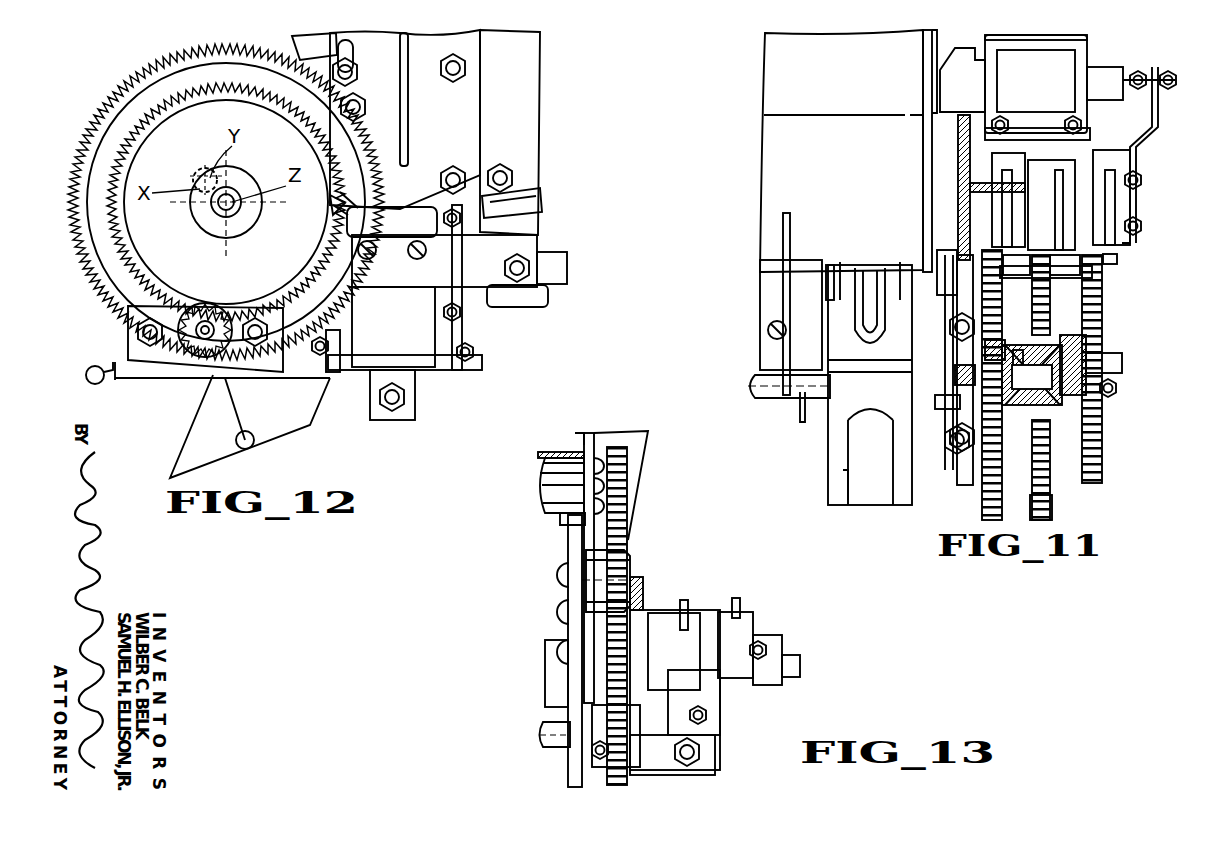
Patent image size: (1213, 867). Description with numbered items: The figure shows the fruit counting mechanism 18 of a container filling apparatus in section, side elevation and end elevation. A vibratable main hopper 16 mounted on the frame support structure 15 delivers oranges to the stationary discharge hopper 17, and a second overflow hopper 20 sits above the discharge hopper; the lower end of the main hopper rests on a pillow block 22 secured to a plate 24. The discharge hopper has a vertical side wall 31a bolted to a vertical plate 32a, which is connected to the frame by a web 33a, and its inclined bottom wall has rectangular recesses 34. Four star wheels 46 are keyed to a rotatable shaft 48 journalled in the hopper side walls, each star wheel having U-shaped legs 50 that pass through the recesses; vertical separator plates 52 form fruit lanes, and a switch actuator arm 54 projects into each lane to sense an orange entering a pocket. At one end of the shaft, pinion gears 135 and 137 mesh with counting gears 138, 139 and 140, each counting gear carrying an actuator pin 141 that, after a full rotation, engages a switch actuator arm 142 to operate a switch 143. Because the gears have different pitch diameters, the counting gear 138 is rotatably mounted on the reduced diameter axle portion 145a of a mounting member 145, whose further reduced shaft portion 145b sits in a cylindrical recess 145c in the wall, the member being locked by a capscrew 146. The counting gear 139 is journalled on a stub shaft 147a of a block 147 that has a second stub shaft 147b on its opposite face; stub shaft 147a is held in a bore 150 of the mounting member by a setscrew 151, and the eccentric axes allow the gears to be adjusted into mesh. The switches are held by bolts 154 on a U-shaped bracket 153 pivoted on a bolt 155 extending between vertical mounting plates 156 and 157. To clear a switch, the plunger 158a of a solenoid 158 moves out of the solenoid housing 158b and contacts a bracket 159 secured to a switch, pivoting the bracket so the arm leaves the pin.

In FIG. 11, the frame support structure 15 is at (952, 180).
In FIG. 12, the vibratable main hopper 16 is at (510, 132).
In FIG. 11, the vibratable main hopper 16 is at (841, 151).
In FIG. 11, the stationary discharge hopper 17 is at (762, 298).
In FIG. 13, the stationary discharge hopper 17 is at (546, 669).
In FIG. 12, the counting mechanism 18 is at (126, 312).
In FIG. 11, the counting mechanism 18 is at (824, 456).
In FIG. 12, the second overflow hopper 20 is at (300, 40).
In FIG. 12, the pillow block 22 is at (520, 202).
In FIG. 12, the plate 24 is at (518, 185).
In FIG. 11, the side wall 31a is at (985, 500).
In FIG. 13, the side wall 31a is at (568, 548).
In FIG. 12, the vertical plate 32a is at (405, 119).
In FIG. 12, the web 33a is at (408, 112).
In FIG. 11, the rectangular recess 34 is at (830, 266).
In FIG. 12, the star wheel 46 is at (232, 385).
In FIG. 11, the star wheel 46 is at (836, 390).
In FIG. 12, the rotatable shaft 48 is at (214, 322).
In FIG. 11, the rotatable shaft 48 is at (750, 386).
In FIG. 13, the rotatable shaft 48 is at (542, 735).
In FIG. 12, the leg 50 is at (108, 368).
In FIG. 11, the leg 50 is at (902, 290).
In FIG. 11, the vertical separator plate 52 is at (792, 220).
In FIG. 11, the switch actuator arm 54 is at (868, 306).
In FIG. 12, the pinion gear 135 is at (192, 357).
In FIG. 13, the pinion gear 135 is at (621, 742).
In FIG. 12, the pinion gear 137 is at (203, 314).
In FIG. 12, the counting gear 138 is at (186, 50).
In FIG. 11, the counting gear 138 is at (982, 512).
In FIG. 13, the counting gear 138 is at (627, 526).
In FIG. 12, the counting gear 139 is at (132, 80).
In FIG. 11, the counting gear 139 is at (1048, 498).
In FIG. 12, the counting gear 140 is at (226, 202).
In FIG. 11, the counting gear 140 is at (1100, 448).
In FIG. 12, the actuator pin 141 is at (330, 203).
In FIG. 11, the actuator pin 141 is at (1153, 261).
In FIG. 13, the actuator pin 141 is at (642, 602).
In FIG. 12, the switch actuator arm 142 is at (348, 202).
In FIG. 11, the switch actuator arm 142 is at (1040, 206).
In FIG. 13, the switch actuator arm 142 is at (672, 684).
In FIG. 12, the switch 143 is at (392, 222).
In FIG. 11, the switch 143 is at (1010, 158).
In FIG. 13, the switch 143 is at (636, 662).
In FIG. 11, the mounting member 145 is at (1025, 412).
In FIG. 11, the reduced diameter axle portion 145a is at (998, 348).
In FIG. 12, the further reduced diameter shaft portion 145b is at (204, 168).
In FIG. 11, the further reduced diameter shaft portion 145b is at (964, 452).
In FIG. 11, the cylindrical recess 145c is at (958, 370).
In FIG. 13, the cylindrical recess 145c is at (633, 592).
In FIG. 11, the capscrew 146 is at (938, 404).
In FIG. 11, the block 147 is at (1072, 352).
In FIG. 11, the stub shaft 147a is at (1046, 384).
In FIG. 12, the second stub shaft 147b is at (232, 206).
In FIG. 11, the second stub shaft 147b is at (1124, 366).
In FIG. 12, the bore 150 is at (203, 207).
In FIG. 11, the bore 150 is at (1066, 372).
In FIG. 11, the setscrew 151 is at (1034, 350).
In FIG. 12, the U-shaped bracket 153 is at (407, 287).
In FIG. 11, the U-shaped bracket 153 is at (1085, 192).
In FIG. 13, the U-shaped bracket 153 is at (720, 708).
In FIG. 12, the bolt 154 is at (418, 258).
In FIG. 11, the bolt 154 is at (1134, 178).
In FIG. 13, the bolt 154 is at (765, 650).
In FIG. 12, the bolt 155 is at (318, 345).
In FIG. 13, the bolt 155 is at (700, 753).
In FIG. 12, the vertical mounting plate 156 is at (345, 372).
In FIG. 11, the vertical mounting plate 156 is at (1092, 274).
In FIG. 13, the vertical mounting plate 156 is at (655, 754).
In FIG. 12, the vertical mounting plate 157 is at (460, 370).
In FIG. 11, the vertical mounting plate 157 is at (1090, 134).
In FIG. 12, the solenoid 158 is at (520, 298).
In FIG. 11, the solenoid 158 is at (1036, 84).
In FIG. 11, the plunger 158a is at (1102, 80).
In FIG. 13, the plunger 158a is at (732, 680).
In FIG. 11, the solenoid housing 158b is at (1056, 36).
In FIG. 12, the bracket 159 is at (503, 250).
In FIG. 11, the bracket 159 is at (1158, 108).
In FIG. 13, the bracket 159 is at (770, 661).